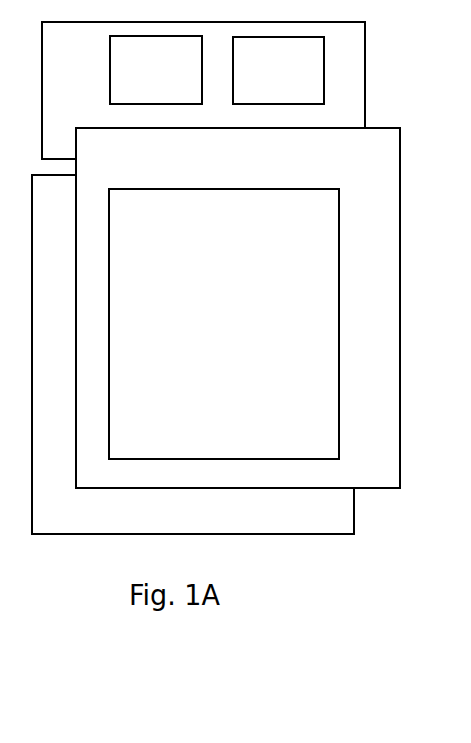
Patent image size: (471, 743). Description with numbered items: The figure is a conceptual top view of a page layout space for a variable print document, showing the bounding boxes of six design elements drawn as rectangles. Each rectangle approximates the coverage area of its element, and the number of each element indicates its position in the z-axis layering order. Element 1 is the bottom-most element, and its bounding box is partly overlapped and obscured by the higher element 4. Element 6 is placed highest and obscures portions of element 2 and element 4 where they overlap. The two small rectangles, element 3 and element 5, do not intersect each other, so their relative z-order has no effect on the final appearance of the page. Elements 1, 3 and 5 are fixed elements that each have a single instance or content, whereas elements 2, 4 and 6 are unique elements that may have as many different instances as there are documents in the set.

The element 1 is at (203, 90).
The element 2 is at (193, 353).
The element 3 is at (156, 70).
The element 4 is at (238, 308).
The element 5 is at (278, 70).
The element 6 is at (224, 324).